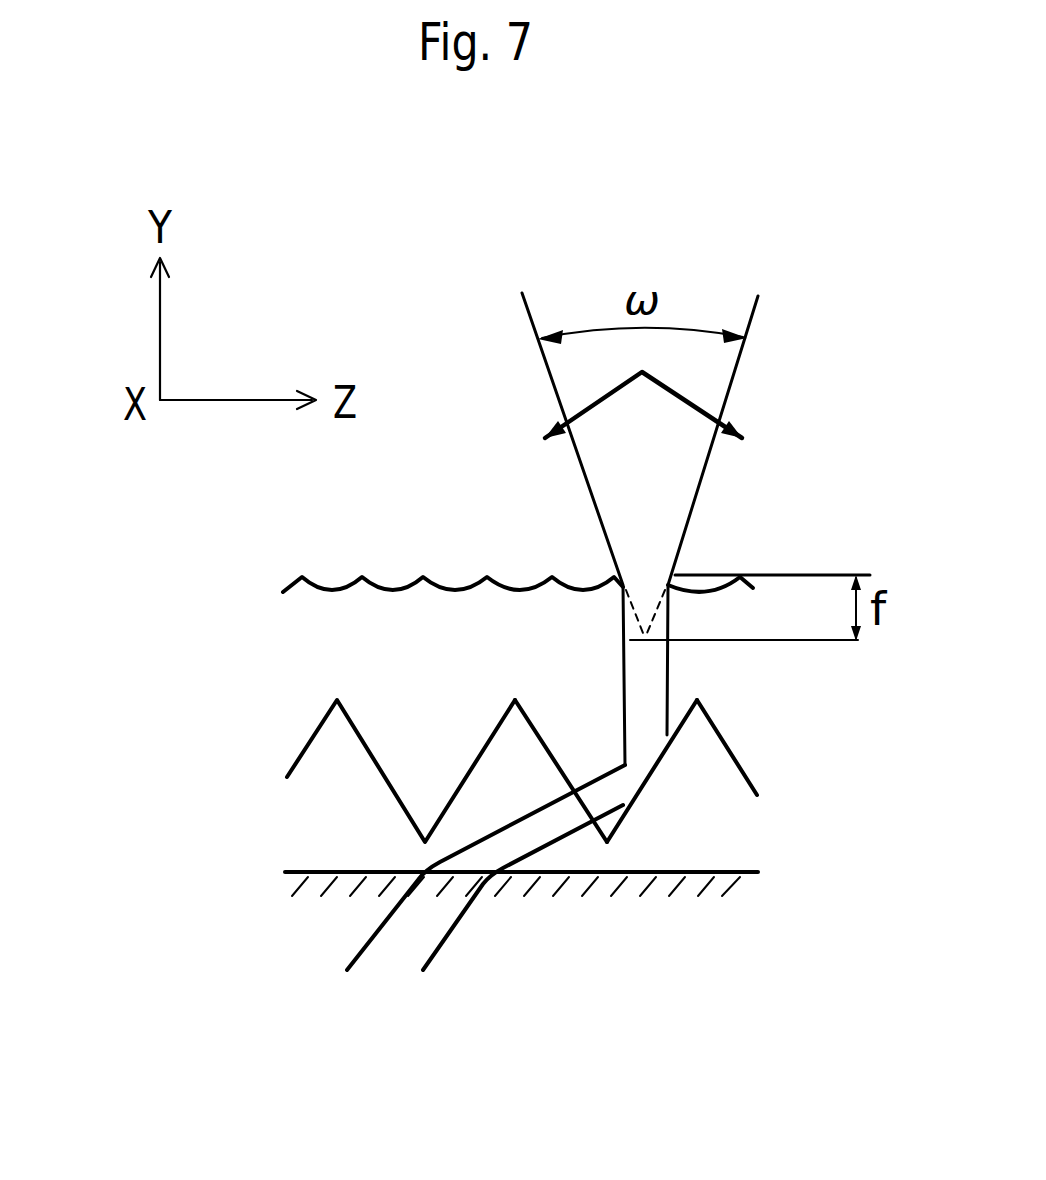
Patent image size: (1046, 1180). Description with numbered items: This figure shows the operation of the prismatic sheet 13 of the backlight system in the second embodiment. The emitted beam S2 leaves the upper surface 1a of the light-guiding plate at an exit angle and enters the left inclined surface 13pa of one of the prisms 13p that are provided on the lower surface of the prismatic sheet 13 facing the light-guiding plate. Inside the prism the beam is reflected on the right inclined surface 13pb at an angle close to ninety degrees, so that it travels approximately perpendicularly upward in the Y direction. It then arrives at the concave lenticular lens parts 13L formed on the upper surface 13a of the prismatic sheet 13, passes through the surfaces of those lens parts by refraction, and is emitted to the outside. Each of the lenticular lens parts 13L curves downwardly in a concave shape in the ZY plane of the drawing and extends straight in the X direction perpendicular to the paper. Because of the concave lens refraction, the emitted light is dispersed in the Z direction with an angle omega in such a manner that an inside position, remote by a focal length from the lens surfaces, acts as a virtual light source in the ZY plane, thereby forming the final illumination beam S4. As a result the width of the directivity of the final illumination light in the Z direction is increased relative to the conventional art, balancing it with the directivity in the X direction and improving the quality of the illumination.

The prismatic sheet 13 is at (383, 642).
The concave lenticular lens parts 13L is at (583, 590).
The upper surface 13a is at (713, 570).
The prisms 13p is at (418, 782).
The left inclined surface 13pa is at (550, 770).
The right inclined surface 13pb is at (650, 773).
The upper surface 1a is at (330, 872).
The emitted beam S2 is at (537, 837).
The final illumination beam S4 is at (670, 460).